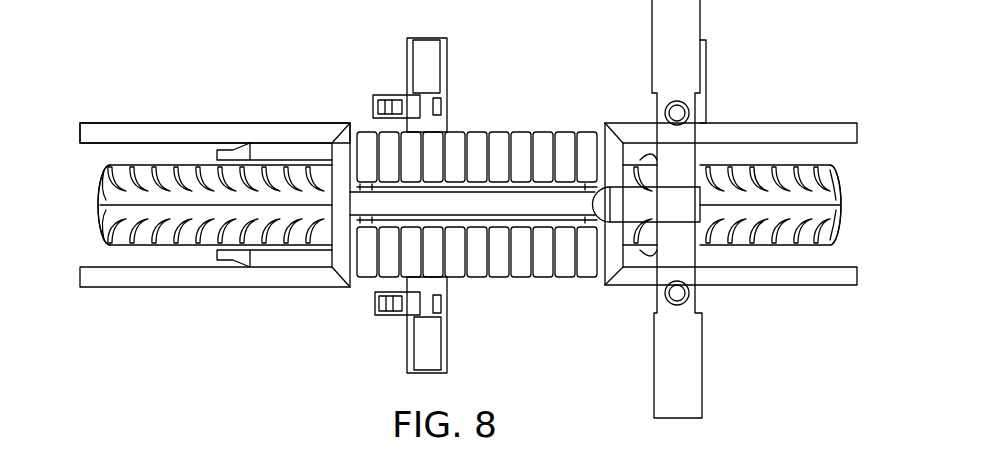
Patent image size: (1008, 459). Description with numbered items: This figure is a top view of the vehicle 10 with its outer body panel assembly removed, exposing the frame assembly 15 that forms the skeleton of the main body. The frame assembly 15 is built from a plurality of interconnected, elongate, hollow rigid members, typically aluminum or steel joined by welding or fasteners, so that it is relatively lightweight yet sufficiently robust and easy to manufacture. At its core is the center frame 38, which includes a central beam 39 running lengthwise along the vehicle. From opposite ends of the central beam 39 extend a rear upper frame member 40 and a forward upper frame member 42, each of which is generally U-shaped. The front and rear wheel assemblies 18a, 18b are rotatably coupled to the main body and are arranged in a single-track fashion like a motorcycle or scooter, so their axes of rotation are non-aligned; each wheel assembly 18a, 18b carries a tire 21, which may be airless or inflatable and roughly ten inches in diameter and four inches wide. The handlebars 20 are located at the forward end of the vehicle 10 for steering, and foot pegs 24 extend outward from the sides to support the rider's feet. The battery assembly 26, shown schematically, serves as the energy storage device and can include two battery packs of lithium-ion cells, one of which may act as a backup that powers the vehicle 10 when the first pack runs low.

The vehicle 10 is at (110, 65).
The frame assembly 15 is at (288, 123).
The front wheel assembly 18a is at (838, 210).
The rear wheel assembly 18b is at (105, 198).
The handlebars 20 is at (700, 302).
The tire 21 is at (100, 220).
The foot pegs 24 is at (432, 55).
The battery assembly 26 is at (522, 256).
The center frame 38 is at (490, 199).
The central beam 39 is at (452, 200).
The rear upper frame member 40 is at (165, 125).
The forward upper frame member 42 is at (815, 278).